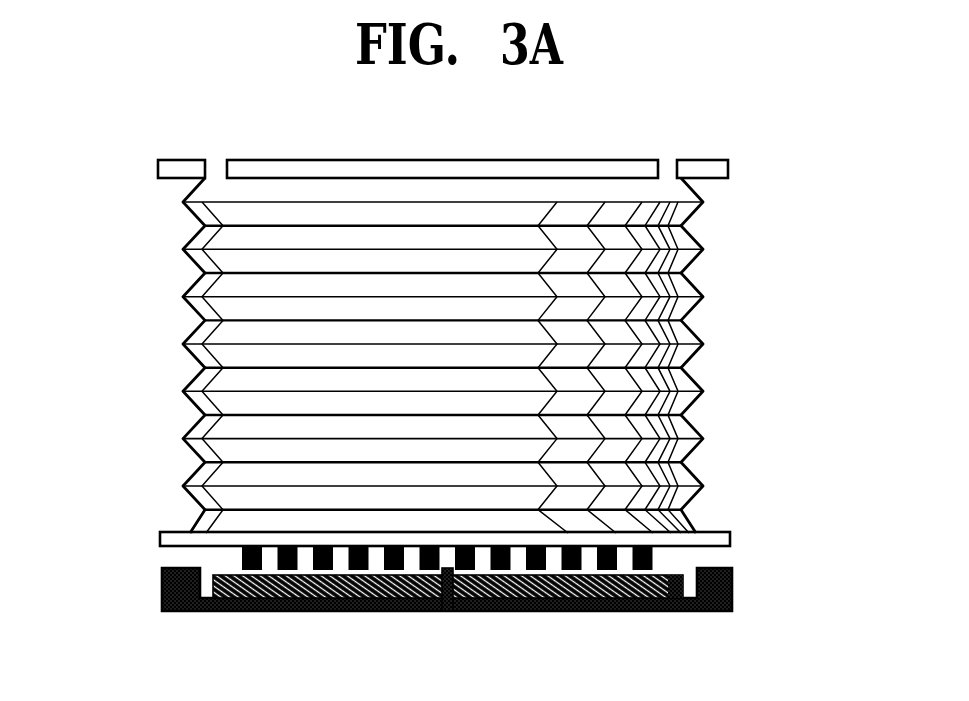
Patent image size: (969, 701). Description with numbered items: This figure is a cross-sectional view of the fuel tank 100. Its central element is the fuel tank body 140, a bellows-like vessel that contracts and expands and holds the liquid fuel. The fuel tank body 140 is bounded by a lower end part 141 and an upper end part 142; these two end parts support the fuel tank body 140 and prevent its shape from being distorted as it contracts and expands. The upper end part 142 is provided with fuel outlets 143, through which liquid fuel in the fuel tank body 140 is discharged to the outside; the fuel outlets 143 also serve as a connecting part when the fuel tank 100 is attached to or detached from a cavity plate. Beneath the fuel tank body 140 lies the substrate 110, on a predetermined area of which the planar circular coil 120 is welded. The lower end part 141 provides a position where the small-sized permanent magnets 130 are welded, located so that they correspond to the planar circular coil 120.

The fuel tank 100 is at (124, 174).
The substrate 110 is at (448, 611).
The planar circular coil 120 is at (287, 592).
The small-sized permanent magnets 130 is at (668, 600).
The fuel tank body 140 is at (187, 346).
The lower end part 141 is at (730, 533).
The upper end part 142 is at (728, 160).
The fuel outlets 143 is at (217, 166).